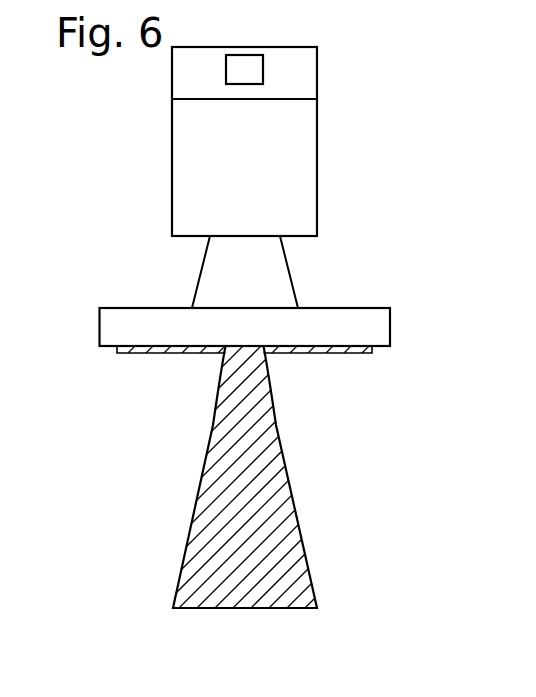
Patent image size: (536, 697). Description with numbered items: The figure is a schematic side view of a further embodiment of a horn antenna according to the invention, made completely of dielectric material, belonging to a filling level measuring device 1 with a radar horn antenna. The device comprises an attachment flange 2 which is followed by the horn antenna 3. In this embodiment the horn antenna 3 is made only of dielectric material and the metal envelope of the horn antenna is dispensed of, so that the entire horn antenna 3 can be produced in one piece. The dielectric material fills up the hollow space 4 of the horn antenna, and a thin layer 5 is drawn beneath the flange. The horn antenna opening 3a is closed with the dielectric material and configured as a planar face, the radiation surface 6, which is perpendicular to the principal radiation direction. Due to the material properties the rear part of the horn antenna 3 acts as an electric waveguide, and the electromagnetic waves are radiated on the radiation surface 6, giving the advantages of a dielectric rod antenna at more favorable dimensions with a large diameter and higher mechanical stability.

The filling level measuring device 1 is at (286, 180).
The attachment flange 2 is at (350, 329).
The horn antenna 3 is at (206, 460).
The horn antenna opening 3a is at (245, 612).
The hollow space of the horn antenna 4 is at (215, 550).
The sealing layer 5 is at (136, 352).
The radiation surface 6 is at (266, 610).